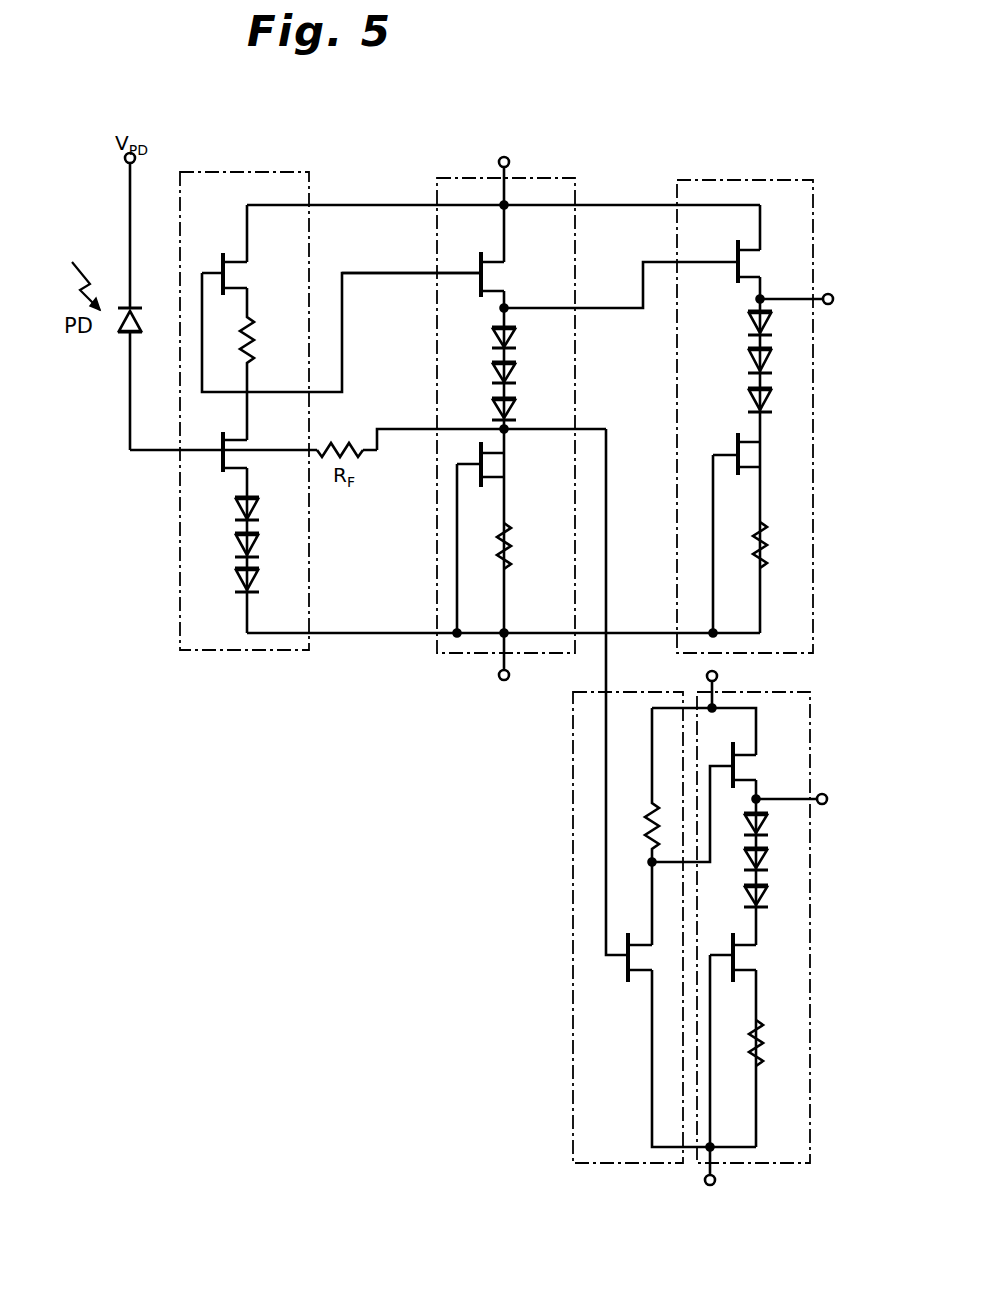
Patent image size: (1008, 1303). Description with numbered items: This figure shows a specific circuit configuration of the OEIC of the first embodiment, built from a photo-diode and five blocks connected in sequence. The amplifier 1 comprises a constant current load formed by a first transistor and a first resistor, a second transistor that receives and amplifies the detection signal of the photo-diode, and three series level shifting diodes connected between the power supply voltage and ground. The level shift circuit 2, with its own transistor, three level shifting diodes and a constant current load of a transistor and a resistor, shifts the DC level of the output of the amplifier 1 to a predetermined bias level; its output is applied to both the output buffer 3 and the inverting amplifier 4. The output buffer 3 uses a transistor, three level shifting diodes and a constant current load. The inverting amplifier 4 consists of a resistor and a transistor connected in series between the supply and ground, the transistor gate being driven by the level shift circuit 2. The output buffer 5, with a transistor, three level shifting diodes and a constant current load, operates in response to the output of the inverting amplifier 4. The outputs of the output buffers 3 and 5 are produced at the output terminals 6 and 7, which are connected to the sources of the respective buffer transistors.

The amplifier 1 is at (266, 172).
The level shift circuit 2 is at (560, 178).
The output buffer 3 is at (762, 180).
The inverting amplifier 4 is at (570, 797).
The output buffer 5 is at (815, 772).
The output terminal 6 is at (834, 292).
The output terminal 7 is at (828, 810).